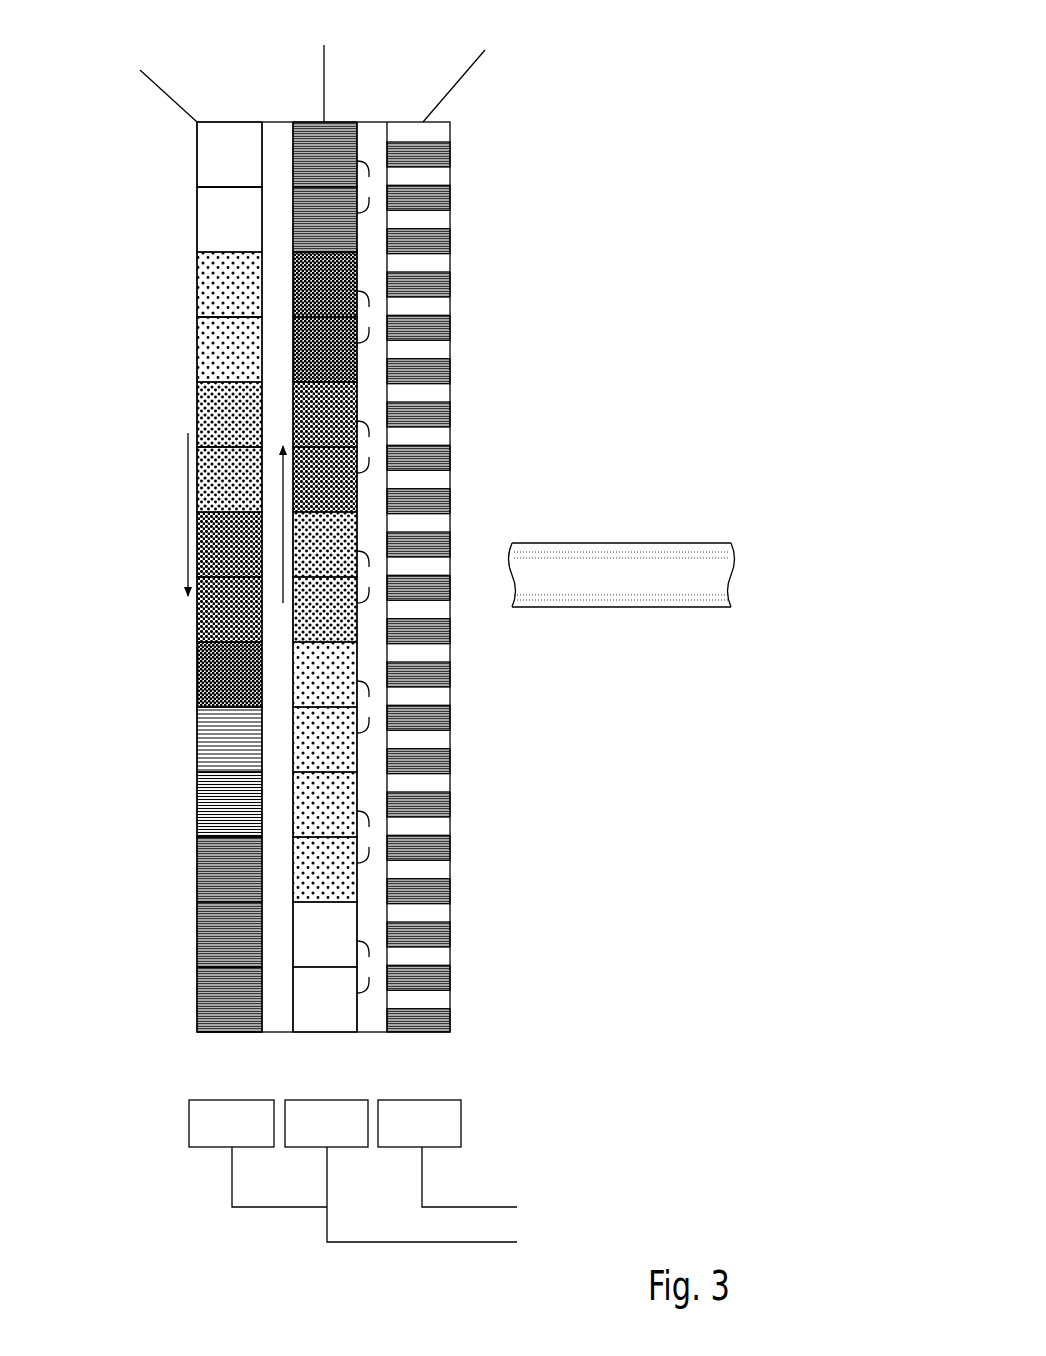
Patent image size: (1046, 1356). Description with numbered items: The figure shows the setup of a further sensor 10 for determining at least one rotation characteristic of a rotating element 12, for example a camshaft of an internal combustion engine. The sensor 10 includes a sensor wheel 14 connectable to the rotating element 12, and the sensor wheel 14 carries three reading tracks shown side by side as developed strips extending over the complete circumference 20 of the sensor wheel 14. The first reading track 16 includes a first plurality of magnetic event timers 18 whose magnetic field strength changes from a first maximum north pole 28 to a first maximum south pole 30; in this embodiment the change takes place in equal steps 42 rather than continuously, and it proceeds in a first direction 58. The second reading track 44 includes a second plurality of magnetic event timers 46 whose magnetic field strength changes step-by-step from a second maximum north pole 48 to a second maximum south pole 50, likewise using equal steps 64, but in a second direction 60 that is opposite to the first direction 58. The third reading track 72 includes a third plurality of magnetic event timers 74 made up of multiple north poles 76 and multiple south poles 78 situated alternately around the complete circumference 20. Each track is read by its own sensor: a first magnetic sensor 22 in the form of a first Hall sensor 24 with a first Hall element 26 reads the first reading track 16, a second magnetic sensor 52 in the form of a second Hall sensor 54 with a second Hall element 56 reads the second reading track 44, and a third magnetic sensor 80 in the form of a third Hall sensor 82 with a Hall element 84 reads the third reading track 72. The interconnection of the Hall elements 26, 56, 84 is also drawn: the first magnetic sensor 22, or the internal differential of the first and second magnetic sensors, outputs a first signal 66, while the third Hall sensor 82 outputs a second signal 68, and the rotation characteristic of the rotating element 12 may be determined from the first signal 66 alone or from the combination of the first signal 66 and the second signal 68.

The sensor 10 is at (668, 97).
The rotating element 12 is at (636, 561).
The sensor wheel 14 is at (462, 109).
The first reading track 16 is at (167, 530).
The magnetic event timers 18 is at (204, 350).
The complete circumference 20 is at (174, 1017).
The first magnetic sensor 22 is at (211, 1139).
The first Hall sensor 24 is at (232, 1166).
The first Hall element 26 is at (211, 1110).
The first maximum north pole 28 is at (204, 133).
The first maximum south pole 30 is at (204, 998).
The equal steps 42 is at (204, 200).
The second reading track 44 is at (330, 578).
The second plurality of magnetic event timers 46 is at (300, 271).
The second maximum north pole 48 is at (347, 1022).
The second maximum south pole 50 is at (286, 556).
The second magnetic sensor 52 is at (348, 1144).
The second Hall sensor 54 is at (327, 1176).
The second Hall element 56 is at (348, 1115).
The first direction 58 is at (188, 518).
The second direction 60 is at (283, 586).
The equal steps 64 is at (369, 577).
The first signal 66 is at (232, 1195).
The second signal 68 is at (327, 1195).
The third reading track 72 is at (497, 519).
The third plurality of magnetic event timers 74 is at (444, 574).
The north poles 76 is at (444, 574).
The south poles 78 is at (440, 287).
The third magnetic sensor 80 is at (447, 1153).
The third Hall sensor 82 is at (422, 1172).
The Hall element 84 is at (447, 1124).